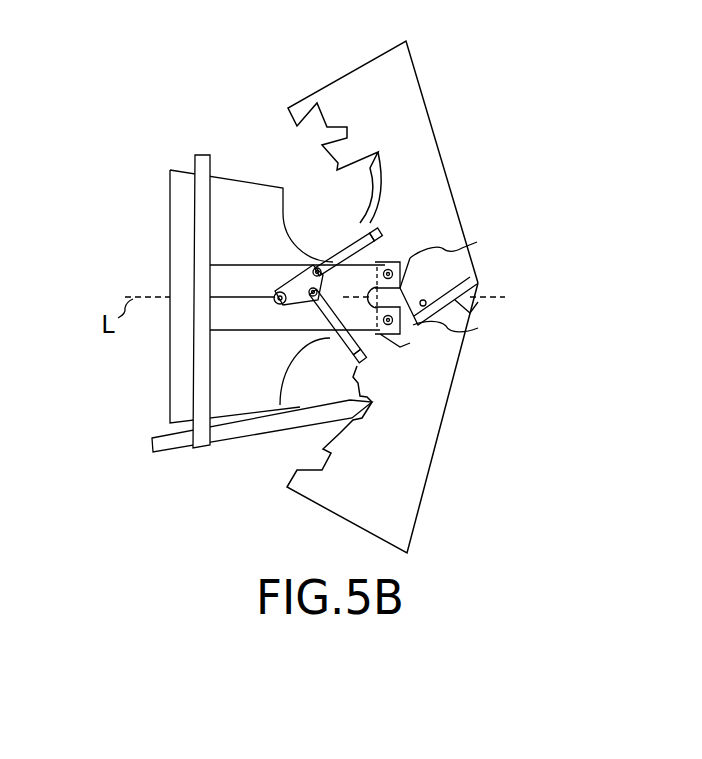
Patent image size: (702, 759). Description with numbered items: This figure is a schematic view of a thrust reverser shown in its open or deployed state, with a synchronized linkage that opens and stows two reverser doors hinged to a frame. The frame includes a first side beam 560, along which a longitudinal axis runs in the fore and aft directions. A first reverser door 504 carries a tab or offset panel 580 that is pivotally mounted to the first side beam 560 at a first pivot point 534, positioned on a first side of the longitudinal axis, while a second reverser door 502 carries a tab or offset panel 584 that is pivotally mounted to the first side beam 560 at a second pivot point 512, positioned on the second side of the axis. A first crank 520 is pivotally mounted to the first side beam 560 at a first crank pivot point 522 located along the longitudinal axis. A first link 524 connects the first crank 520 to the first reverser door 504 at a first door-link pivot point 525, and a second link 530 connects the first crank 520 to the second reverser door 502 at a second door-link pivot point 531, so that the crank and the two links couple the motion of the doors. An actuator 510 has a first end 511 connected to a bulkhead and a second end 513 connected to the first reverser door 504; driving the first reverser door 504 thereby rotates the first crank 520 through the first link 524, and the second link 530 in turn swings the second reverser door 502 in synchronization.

The second reverser door 502 is at (417, 52).
The first reverser door 504 is at (420, 509).
The actuator 510 is at (152, 441).
The first end 511 is at (233, 430).
The second end 513 is at (360, 407).
The first side beam 560 is at (215, 272).
The first crank 520 is at (311, 266).
The first crank pivot point 522 is at (288, 278).
The first link 524 is at (340, 343).
The first door-link pivot point 525 is at (362, 361).
The second link 530 is at (362, 231).
The second door-link pivot point 531 is at (381, 228).
The first pivot point 534 is at (398, 337).
The second pivot point 512 is at (406, 253).
The offset panel 584 is at (447, 250).
The offset panel 580 is at (478, 328).